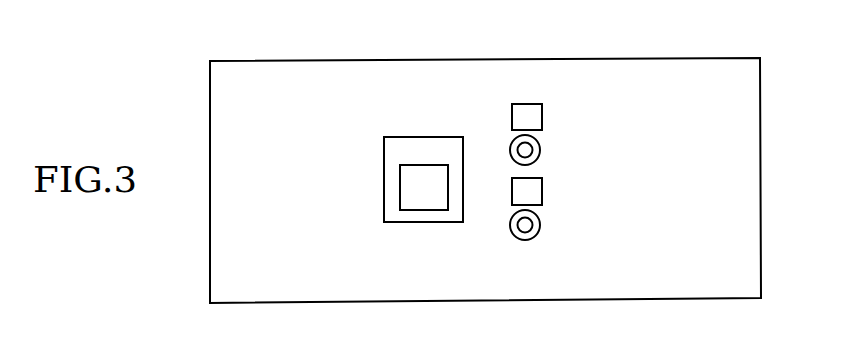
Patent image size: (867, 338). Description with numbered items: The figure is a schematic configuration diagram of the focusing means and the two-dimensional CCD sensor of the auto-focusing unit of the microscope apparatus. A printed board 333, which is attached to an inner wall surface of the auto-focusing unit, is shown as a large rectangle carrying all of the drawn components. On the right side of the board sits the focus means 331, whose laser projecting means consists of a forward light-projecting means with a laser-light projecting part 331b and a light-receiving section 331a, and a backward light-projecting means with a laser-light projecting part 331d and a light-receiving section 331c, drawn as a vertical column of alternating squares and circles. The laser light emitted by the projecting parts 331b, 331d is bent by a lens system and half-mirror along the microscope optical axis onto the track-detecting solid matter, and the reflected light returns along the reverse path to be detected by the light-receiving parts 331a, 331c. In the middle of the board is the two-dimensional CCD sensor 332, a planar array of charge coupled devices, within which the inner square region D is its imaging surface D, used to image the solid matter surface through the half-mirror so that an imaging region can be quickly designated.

The printed board 333 is at (285, 60).
The two-dimensional CCD sensor 332 is at (412, 137).
The imaging surface D is at (400, 188).
The focus means 331 is at (525, 95).
The light-receiving section 331a is at (542, 111).
The laser-light projecting part 331b is at (540, 150).
The light-receiving section 331c is at (542, 190).
The laser-light projecting part 331d is at (540, 225).